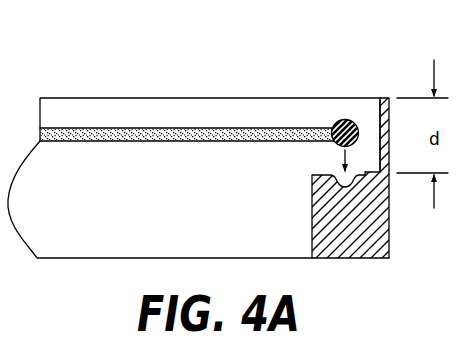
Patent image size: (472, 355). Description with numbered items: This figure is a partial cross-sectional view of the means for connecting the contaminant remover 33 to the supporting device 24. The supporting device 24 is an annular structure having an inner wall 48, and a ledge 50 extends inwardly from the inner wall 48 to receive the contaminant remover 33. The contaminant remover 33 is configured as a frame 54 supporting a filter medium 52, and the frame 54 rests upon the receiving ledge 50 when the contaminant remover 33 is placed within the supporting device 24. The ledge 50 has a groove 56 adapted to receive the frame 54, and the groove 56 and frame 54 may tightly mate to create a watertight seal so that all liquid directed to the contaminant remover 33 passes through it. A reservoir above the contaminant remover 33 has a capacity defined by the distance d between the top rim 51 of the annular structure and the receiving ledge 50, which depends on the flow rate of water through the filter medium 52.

The supporting device 24 is at (99, 281).
The contaminant remover 33 is at (164, 125).
The inner wall 48 is at (379, 116).
The ledge 50 is at (312, 175).
The top rim 51 is at (387, 98).
The filter medium 52 is at (98, 131).
The frame 54 is at (341, 118).
The groove 56 is at (340, 182).